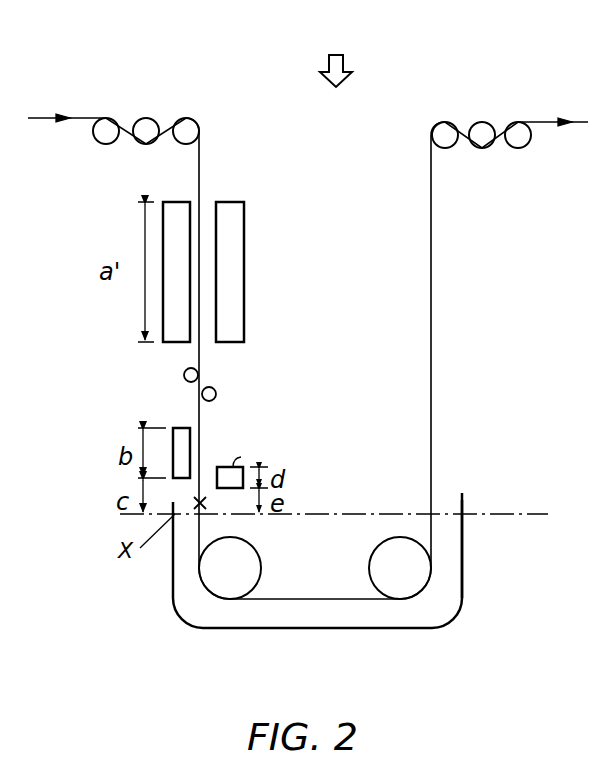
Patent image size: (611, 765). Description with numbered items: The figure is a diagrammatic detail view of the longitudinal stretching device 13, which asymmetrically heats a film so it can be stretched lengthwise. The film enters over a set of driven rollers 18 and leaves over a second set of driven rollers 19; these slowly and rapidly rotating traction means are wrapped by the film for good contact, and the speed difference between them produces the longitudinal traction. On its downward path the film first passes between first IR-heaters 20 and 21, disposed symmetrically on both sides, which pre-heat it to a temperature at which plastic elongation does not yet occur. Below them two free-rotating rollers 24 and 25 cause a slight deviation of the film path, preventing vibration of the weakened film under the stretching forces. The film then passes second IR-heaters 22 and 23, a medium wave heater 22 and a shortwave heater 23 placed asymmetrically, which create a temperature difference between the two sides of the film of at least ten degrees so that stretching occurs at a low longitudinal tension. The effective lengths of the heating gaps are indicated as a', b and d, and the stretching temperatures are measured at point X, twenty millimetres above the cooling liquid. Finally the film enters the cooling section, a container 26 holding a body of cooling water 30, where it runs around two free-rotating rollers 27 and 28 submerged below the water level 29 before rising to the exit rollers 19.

The longitudinal stretching device 13 is at (345, 70).
The set of driven rollers 18 is at (157, 106).
The set of driven rollers 19 is at (507, 108).
The first IR-heater 20 is at (168, 235).
The first IR-heater 21 is at (238, 232).
The second IR-heater 22 is at (171, 430).
The second IR-heater 23 is at (247, 460).
The free-rotating roller 24 is at (184, 375).
The free-rotating roller 25 is at (217, 396).
The container 26 is at (289, 560).
The free-rotating roller 27 is at (220, 585).
The free-rotating roller 28 is at (413, 588).
The level of cooling water 29 is at (447, 513).
The cooling water 30 is at (447, 571).